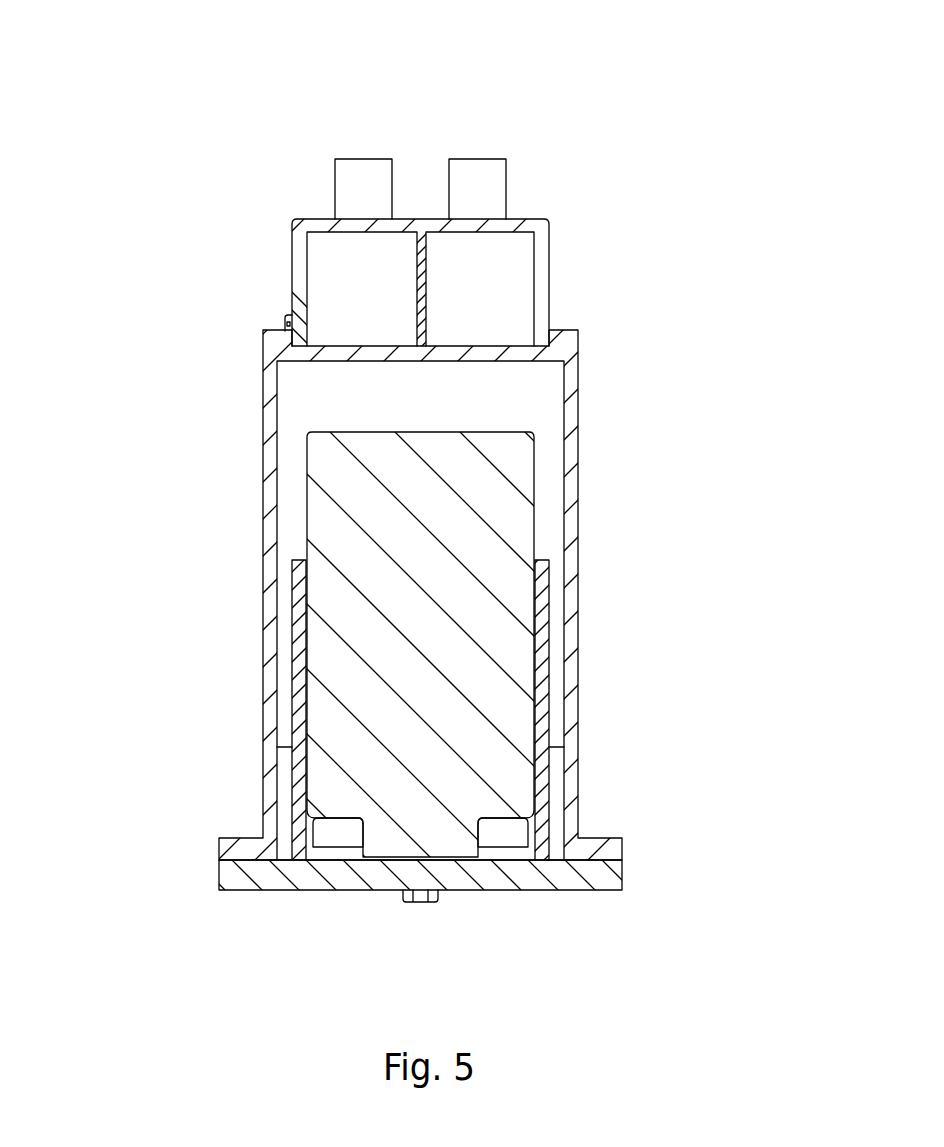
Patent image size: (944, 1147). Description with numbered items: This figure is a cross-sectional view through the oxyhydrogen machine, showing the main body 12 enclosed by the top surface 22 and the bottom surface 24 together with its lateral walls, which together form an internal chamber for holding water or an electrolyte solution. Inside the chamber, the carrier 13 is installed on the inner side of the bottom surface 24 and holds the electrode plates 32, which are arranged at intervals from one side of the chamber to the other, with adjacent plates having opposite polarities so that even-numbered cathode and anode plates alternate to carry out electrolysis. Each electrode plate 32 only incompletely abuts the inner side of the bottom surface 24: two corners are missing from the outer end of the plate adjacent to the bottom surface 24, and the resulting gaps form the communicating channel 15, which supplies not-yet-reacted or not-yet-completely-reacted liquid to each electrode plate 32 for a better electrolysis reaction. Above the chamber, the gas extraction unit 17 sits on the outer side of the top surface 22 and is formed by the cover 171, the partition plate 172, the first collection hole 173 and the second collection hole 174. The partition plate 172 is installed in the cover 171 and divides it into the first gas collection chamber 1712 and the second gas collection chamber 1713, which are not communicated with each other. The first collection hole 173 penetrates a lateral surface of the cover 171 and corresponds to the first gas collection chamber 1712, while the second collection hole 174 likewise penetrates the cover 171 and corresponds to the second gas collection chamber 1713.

The main body 12 is at (200, 477).
The carrier 13 is at (540, 775).
The communicating channel 15 is at (342, 835).
The gas extraction unit 17 is at (560, 181).
The cover 171 is at (304, 222).
The first gas collection chamber 1712 is at (338, 268).
The second gas collection chamber 1713 is at (493, 263).
The partition plate 172 is at (424, 316).
The first collection hole 173 is at (363, 158).
The second collection hole 174 is at (473, 158).
The top surface 22 is at (290, 345).
The bottom surface 24 is at (263, 885).
The electrode plate 32 is at (502, 491).